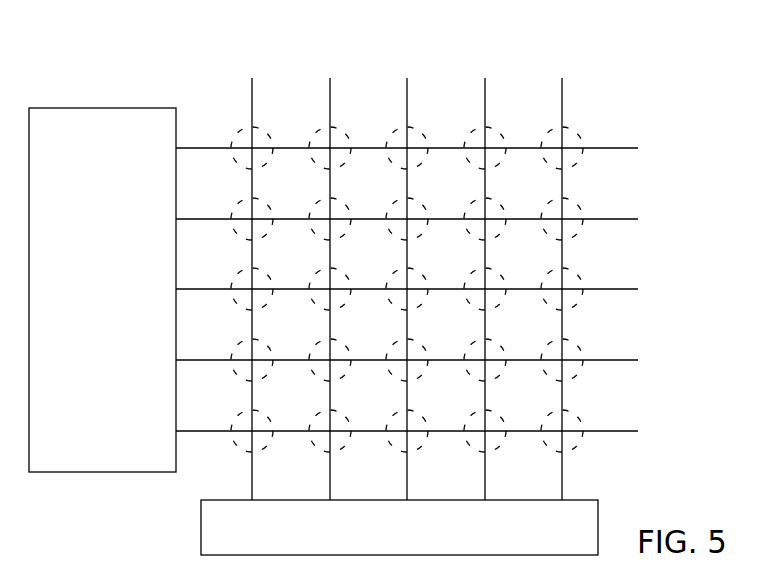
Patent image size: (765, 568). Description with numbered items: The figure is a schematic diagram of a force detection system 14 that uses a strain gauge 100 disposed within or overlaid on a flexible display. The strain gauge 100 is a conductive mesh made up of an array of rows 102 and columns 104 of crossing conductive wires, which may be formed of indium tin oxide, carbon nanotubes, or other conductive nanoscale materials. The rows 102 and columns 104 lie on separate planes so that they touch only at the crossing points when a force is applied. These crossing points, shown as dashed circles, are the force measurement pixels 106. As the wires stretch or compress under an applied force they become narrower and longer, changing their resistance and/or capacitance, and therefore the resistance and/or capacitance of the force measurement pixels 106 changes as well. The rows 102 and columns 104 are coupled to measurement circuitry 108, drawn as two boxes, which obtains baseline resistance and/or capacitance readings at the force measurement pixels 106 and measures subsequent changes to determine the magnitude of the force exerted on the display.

The force detection system 14 is at (636, 57).
The strain gauge 100 is at (241, 93).
The rows 102 is at (623, 147).
The columns 104 is at (252, 106).
The force measurement pixels 106 is at (338, 205).
The measurement circuitry 108 is at (101, 108).